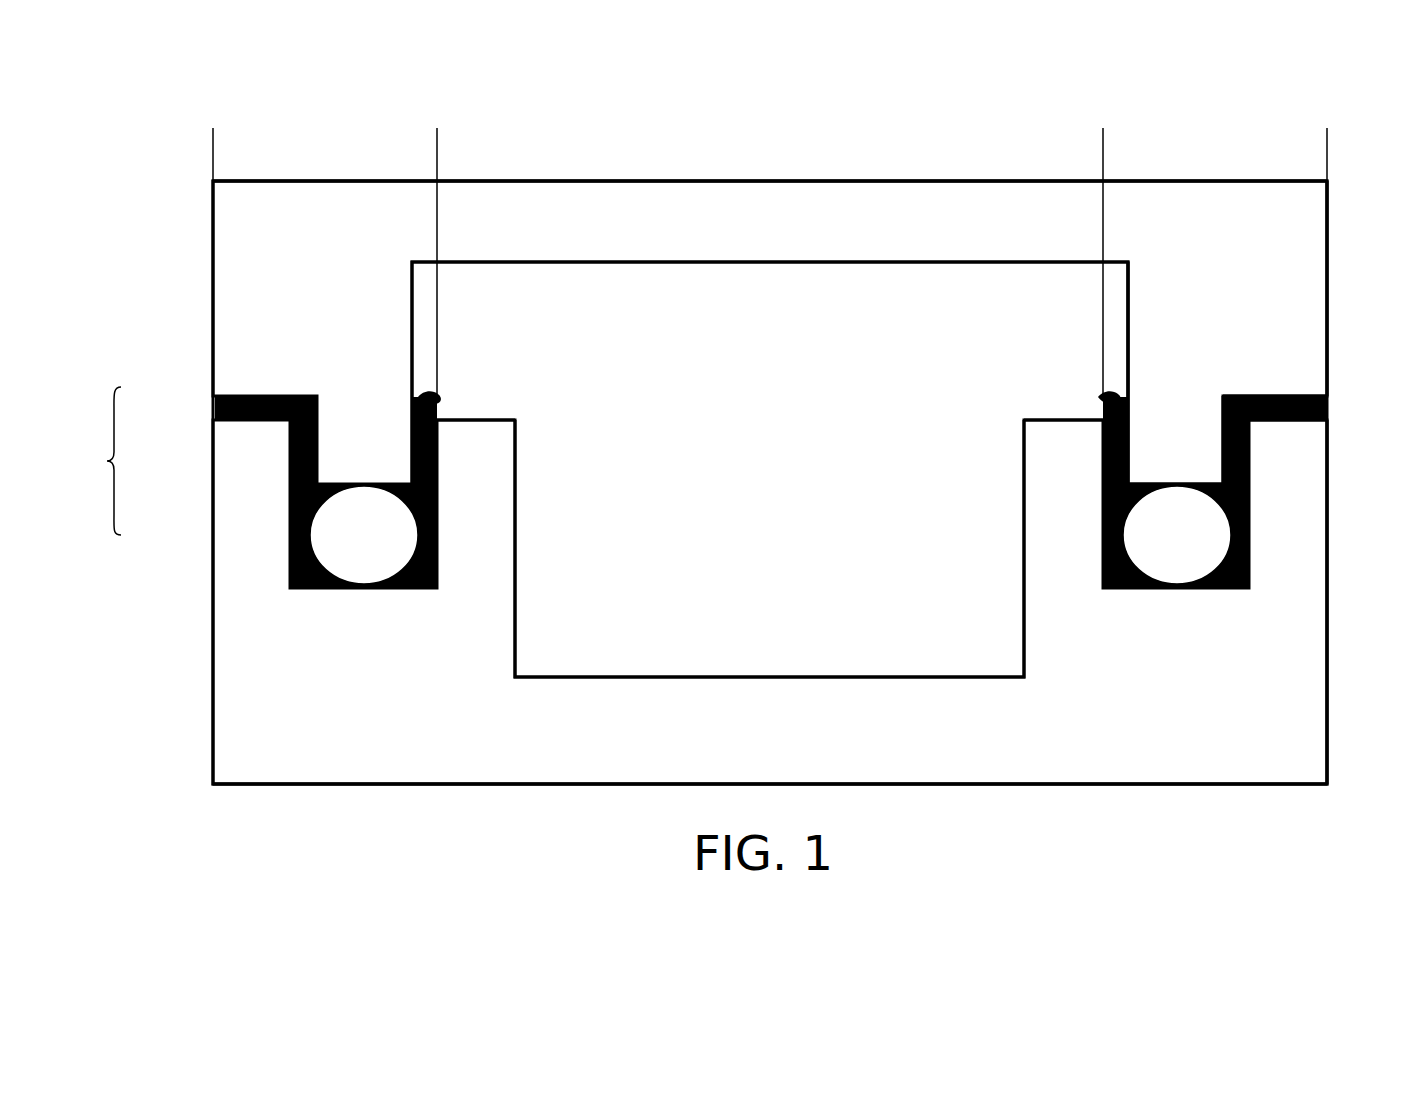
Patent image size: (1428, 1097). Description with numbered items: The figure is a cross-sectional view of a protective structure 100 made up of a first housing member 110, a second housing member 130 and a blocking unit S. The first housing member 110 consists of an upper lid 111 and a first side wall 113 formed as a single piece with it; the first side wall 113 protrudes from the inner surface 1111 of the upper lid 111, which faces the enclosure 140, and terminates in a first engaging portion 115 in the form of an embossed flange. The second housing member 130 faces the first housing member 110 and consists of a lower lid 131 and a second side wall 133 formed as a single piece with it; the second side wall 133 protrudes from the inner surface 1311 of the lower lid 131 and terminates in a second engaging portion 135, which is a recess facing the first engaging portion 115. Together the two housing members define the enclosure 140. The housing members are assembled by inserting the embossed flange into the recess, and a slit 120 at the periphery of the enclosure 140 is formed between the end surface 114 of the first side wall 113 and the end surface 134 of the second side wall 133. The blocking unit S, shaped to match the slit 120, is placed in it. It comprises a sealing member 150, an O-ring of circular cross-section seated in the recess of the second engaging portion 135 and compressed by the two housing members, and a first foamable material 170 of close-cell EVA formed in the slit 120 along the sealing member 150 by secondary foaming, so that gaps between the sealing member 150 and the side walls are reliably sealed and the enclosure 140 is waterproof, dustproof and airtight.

The protective structure 100 is at (228, 62).
The first housing member 110 is at (210, 325).
The upper lid 111 is at (1316, 219).
The inner surface of the upper lid 1111 is at (770, 264).
The first side wall 113 is at (1316, 325).
The end surface of the first side wall 114 is at (1328, 404).
The first engaging portion 115 is at (1176, 442).
The slit 120 is at (437, 136).
The second housing member 130 is at (210, 583).
The lower lid 131 is at (1316, 737).
The inner surface of the lower lid 1311 is at (769, 675).
The second side wall 133 is at (1316, 632).
The end surface of the second side wall 134 is at (1328, 412).
The second engaging portion 135 is at (1250, 518).
The enclosure 140 is at (796, 504).
The sealing member 150 is at (337, 527).
The first foamable material 170 is at (220, 412).
The blocking unit S is at (101, 461).